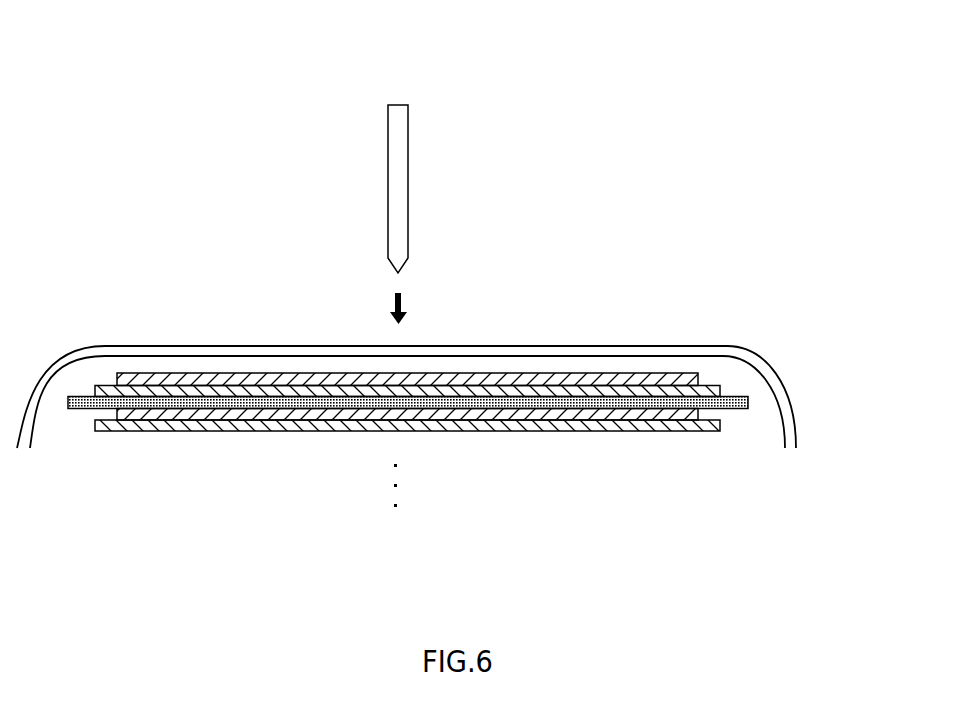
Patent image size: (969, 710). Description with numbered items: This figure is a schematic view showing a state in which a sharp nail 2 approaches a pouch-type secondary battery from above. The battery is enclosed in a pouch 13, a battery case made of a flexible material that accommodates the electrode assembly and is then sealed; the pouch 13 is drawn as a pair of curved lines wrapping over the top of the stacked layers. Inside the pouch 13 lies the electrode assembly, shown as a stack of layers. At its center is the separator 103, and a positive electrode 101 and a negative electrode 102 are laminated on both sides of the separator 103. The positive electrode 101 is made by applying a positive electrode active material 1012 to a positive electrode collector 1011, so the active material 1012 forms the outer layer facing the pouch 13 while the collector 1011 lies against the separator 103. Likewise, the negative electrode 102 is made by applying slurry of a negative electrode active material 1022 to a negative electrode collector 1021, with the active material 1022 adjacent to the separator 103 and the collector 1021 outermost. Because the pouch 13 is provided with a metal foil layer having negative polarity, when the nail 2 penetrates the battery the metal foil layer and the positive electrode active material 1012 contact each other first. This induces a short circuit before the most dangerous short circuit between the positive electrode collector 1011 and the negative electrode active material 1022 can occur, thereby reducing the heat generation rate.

The nail 2 is at (400, 175).
The pouch 13 is at (647, 352).
The positive electrode 101 is at (515, 360).
The positive electrode collector 1011 is at (712, 389).
The positive electrode active material 1012 is at (693, 380).
The negative electrode 102 is at (515, 429).
The negative electrode collector 1021 is at (720, 425).
The negative electrode active material 1022 is at (693, 412).
The separator 103 is at (748, 398).